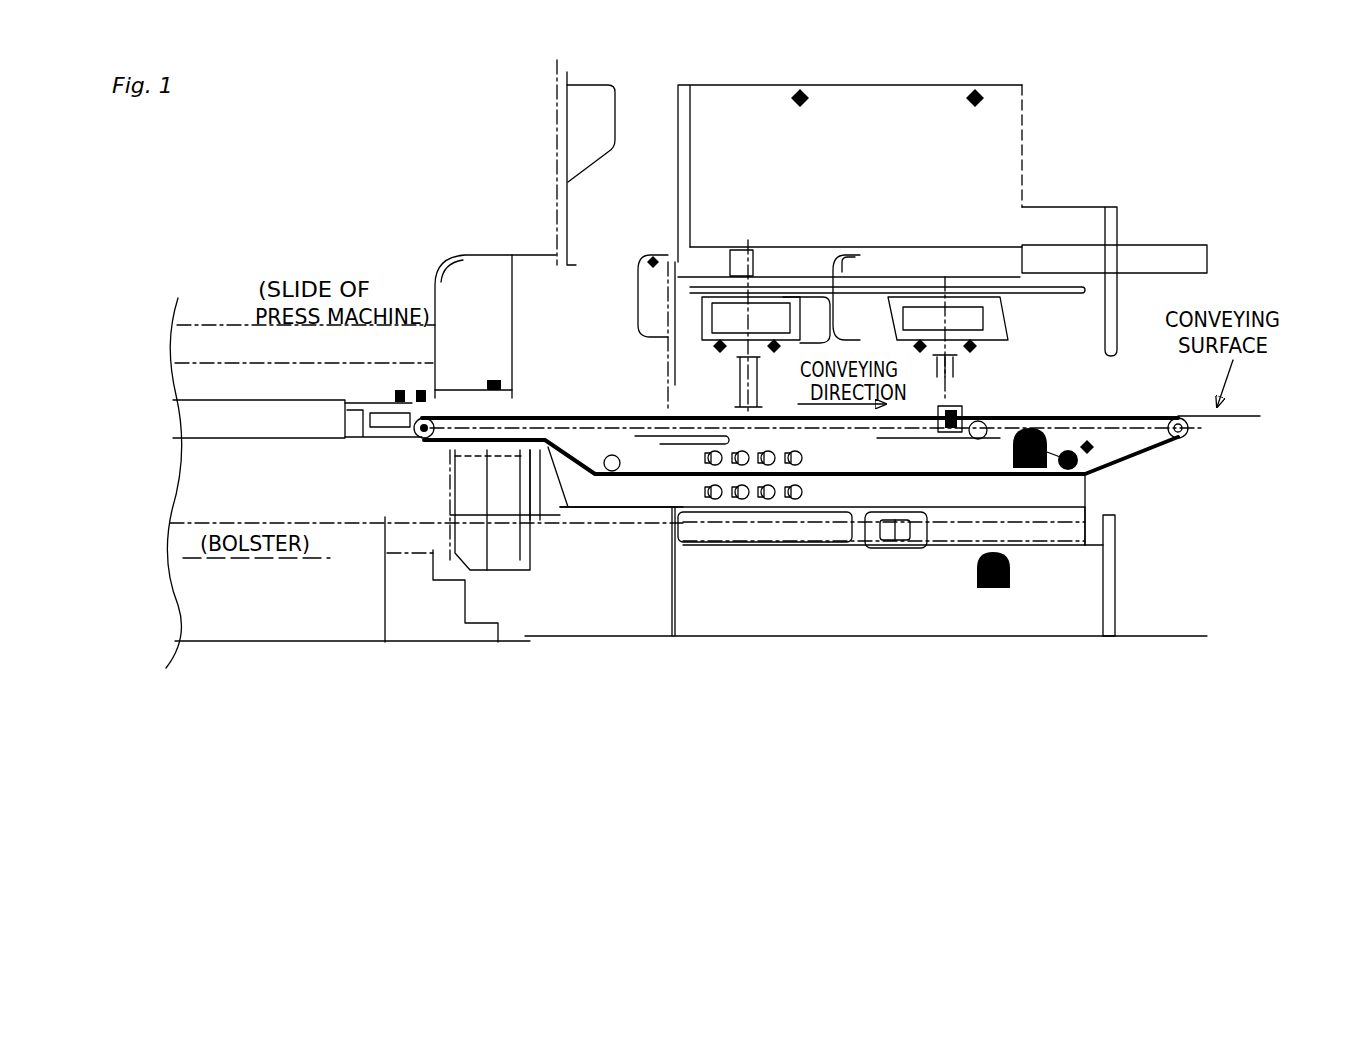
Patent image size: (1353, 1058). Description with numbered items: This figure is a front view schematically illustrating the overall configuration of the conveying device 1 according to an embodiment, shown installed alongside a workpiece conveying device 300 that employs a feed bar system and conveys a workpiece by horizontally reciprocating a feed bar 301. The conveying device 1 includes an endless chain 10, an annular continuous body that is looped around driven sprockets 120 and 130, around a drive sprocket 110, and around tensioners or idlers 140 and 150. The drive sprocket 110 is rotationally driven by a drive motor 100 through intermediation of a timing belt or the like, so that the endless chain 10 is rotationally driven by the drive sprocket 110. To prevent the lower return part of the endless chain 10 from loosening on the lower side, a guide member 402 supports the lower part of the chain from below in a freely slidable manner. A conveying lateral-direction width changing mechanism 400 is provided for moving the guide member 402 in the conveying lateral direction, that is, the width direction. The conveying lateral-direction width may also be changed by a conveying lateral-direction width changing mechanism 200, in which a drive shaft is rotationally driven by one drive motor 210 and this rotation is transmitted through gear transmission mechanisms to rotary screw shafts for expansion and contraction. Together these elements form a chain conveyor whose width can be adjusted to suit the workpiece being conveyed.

The conveying device 1 is at (1078, 673).
The endless chain 10 is at (1013, 410).
The drive motor 100 is at (1010, 452).
The drive sprocket 110 is at (1072, 448).
The driven sprocket 120 is at (420, 447).
The driven sprocket 130 is at (1183, 455).
The tensioner 140 is at (605, 485).
The tensioner 150 is at (980, 407).
The conveying lateral-direction width changing mechanism 200 is at (813, 447).
The drive motor 210 is at (878, 558).
The workpiece conveying device 300 is at (233, 425).
The feed bar 301 is at (248, 397).
The conveying lateral-direction width changing mechanism 400 is at (733, 517).
The guide member 402 is at (633, 510).